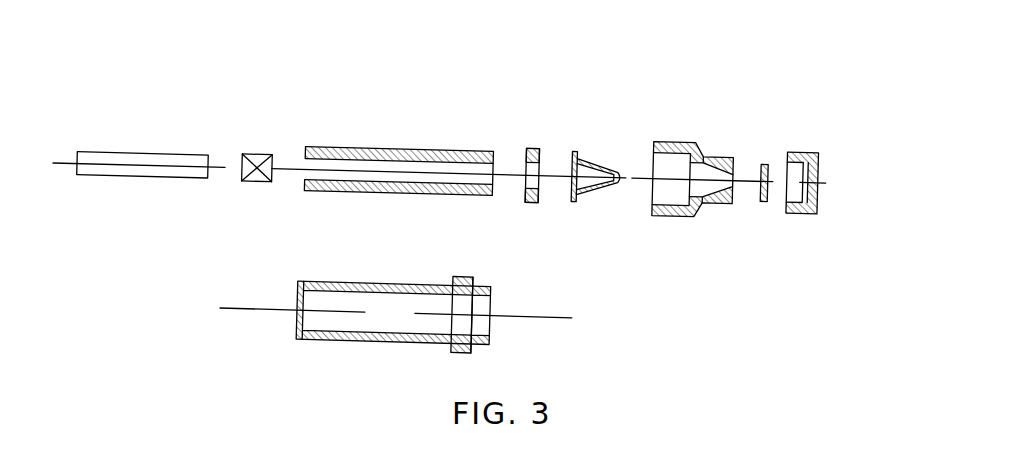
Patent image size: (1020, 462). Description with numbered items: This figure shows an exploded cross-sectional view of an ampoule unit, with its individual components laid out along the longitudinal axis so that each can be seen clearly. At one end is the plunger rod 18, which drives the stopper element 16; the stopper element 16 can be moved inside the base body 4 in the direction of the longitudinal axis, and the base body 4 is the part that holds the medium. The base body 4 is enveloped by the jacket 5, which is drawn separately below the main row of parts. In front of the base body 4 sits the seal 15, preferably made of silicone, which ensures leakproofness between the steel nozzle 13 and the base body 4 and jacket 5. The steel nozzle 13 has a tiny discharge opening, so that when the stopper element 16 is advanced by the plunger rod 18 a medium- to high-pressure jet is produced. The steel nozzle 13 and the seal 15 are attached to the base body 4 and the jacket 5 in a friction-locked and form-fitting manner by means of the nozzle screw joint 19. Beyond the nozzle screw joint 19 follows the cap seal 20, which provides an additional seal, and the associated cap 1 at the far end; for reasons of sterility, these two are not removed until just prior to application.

The cap 1 is at (818, 160).
The base body 4 is at (402, 150).
The jacket 5 is at (378, 302).
The steel nozzle 13 is at (592, 170).
The seal 15 is at (540, 150).
The stopper element 16 is at (258, 153).
The plunger rod 18 is at (152, 152).
The nozzle screw joint 19 is at (675, 173).
The cap seal 20 is at (765, 165).